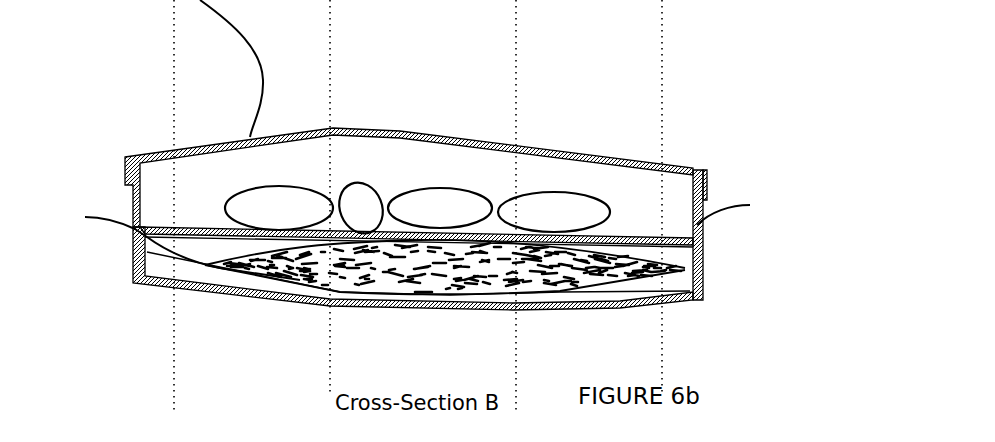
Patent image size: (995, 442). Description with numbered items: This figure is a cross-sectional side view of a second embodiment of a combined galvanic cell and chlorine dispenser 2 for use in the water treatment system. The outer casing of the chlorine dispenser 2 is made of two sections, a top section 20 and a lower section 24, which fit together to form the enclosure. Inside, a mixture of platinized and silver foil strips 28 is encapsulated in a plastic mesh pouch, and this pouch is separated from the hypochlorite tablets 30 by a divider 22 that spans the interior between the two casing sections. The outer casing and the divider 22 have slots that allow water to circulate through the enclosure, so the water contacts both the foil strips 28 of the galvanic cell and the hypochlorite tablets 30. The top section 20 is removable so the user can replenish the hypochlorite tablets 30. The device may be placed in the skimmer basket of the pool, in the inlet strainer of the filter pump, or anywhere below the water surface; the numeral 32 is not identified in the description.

The chlorine dispenser 2 is at (464, 152).
The top section 20 is at (467, 127).
The divider 22 is at (568, 169).
The bottom section 24 is at (660, 268).
The platinized and silver foil strips 28 is at (300, 266).
The hypochlorite tablets 30 is at (575, 193).
The tray bottom 32 is at (580, 304).